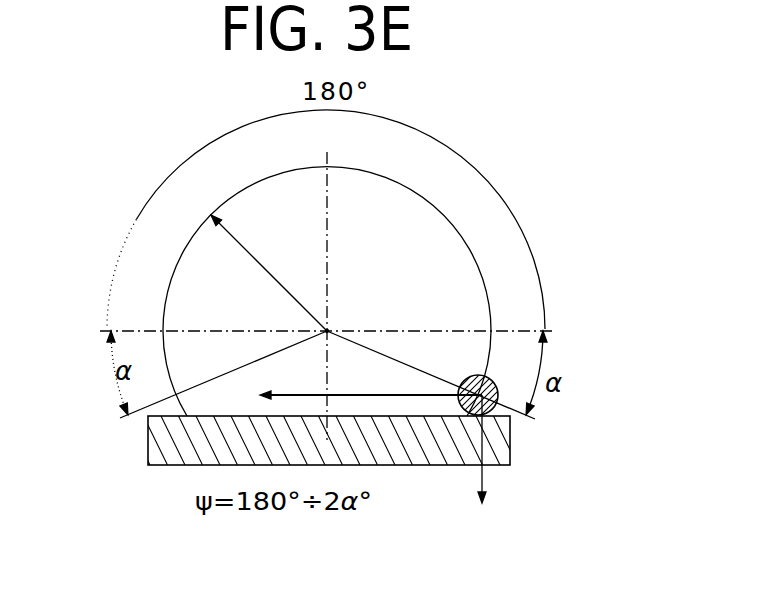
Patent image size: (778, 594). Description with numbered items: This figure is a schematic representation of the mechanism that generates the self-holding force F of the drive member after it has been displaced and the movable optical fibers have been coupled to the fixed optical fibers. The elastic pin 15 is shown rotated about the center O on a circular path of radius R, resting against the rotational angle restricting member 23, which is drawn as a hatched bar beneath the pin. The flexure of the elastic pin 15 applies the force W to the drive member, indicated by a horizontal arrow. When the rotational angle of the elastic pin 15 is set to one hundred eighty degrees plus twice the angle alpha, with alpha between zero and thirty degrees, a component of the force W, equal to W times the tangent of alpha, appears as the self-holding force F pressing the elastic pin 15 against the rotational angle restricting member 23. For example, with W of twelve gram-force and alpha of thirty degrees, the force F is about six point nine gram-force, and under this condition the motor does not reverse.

The elastic pin 15 is at (467, 378).
The rotational angle restricting member 23 is at (505, 445).
The radius R is at (269, 273).
The center O is at (341, 315).
The force W is at (356, 392).
The self-holding force F is at (520, 464).